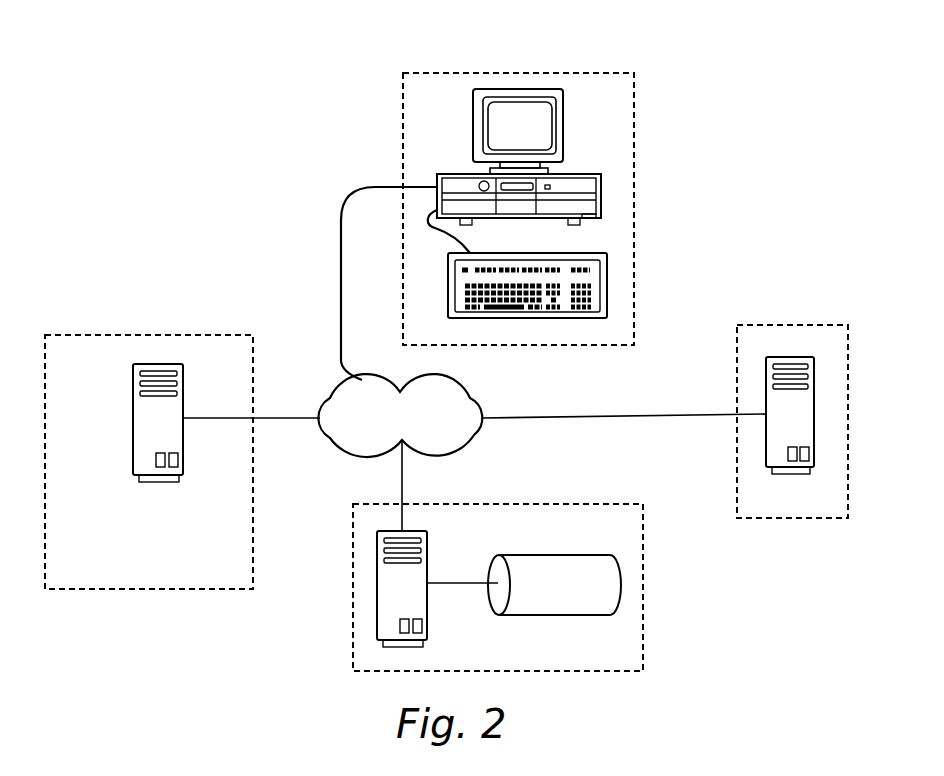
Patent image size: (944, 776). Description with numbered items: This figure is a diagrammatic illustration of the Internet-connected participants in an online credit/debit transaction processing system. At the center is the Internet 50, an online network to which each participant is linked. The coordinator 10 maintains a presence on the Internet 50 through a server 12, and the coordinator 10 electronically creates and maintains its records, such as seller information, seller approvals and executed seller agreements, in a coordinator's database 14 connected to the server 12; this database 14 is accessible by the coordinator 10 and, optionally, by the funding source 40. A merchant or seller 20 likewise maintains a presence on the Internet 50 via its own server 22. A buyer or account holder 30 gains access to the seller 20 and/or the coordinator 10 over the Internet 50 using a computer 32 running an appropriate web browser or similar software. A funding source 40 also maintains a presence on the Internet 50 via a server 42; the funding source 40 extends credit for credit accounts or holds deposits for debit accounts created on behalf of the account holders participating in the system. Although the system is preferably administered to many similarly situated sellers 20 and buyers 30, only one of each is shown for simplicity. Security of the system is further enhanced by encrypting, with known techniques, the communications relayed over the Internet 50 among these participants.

The coordinator 10 is at (643, 590).
The server 12 is at (427, 568).
The coordinator's database 14 is at (565, 616).
The seller 20 is at (163, 589).
The server 22 is at (133, 402).
The buyer 30 is at (634, 228).
The computer 32 is at (574, 177).
The funding source 40 is at (797, 325).
The server 42 is at (806, 474).
The Internet 50 is at (445, 452).